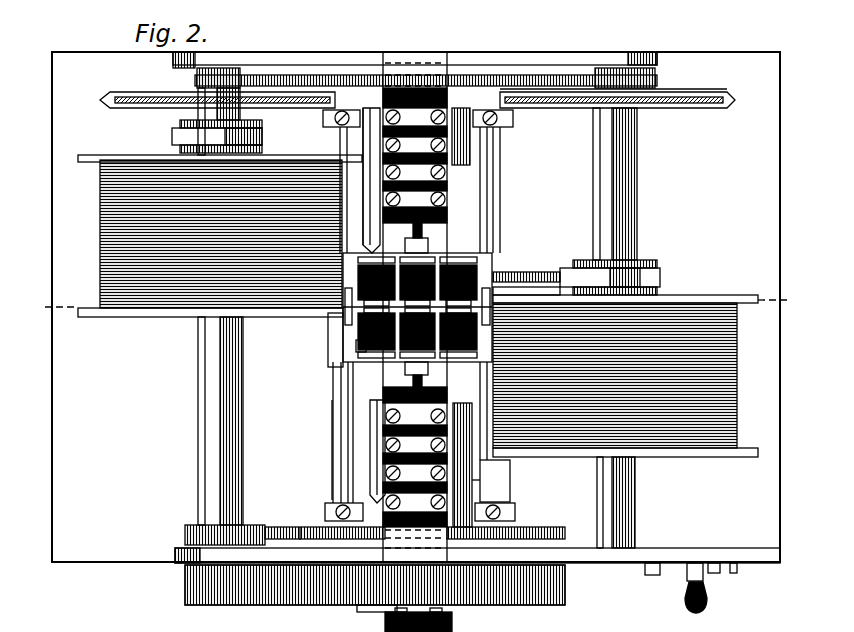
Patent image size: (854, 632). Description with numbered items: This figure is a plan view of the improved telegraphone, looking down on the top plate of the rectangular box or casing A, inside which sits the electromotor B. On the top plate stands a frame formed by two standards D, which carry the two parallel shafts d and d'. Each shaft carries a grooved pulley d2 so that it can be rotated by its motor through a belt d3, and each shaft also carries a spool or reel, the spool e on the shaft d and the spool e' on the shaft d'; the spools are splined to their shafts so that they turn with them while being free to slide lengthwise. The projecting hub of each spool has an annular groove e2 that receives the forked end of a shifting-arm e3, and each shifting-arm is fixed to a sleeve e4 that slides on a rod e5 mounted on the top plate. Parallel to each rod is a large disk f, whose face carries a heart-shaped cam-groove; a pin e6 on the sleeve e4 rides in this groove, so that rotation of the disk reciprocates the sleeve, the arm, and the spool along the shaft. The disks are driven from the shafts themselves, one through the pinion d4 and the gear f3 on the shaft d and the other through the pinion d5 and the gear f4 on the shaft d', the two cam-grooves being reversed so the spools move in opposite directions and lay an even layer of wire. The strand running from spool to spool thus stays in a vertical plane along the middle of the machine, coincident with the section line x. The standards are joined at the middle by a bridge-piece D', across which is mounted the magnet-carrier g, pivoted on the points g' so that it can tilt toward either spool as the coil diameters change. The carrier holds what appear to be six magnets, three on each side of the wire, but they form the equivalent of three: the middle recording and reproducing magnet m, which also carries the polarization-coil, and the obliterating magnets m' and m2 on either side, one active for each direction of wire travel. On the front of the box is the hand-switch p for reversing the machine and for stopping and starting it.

The box or casing A is at (416, 307).
The electromotor B is at (415, 48).
The standard D is at (461, 597).
The bridge-piece D' is at (477, 308).
The shaft d is at (622, 328).
The shaft d' is at (207, 306).
The grooved pulley d2 is at (700, 90).
The belt d3 is at (108, 100).
The pinion d4 is at (656, 78).
The pinion d5 is at (185, 534).
The spool or reel e is at (625, 389).
The spool or reel e' is at (220, 250).
The annular groove e2 is at (205, 137).
The shifting-arm e3 is at (545, 272).
The sleeve e4 is at (328, 345).
The rod e5 is at (425, 233).
The pin e6 is at (482, 480).
The disk f is at (466, 176).
The gear f3 is at (481, 75).
The gear f4 is at (298, 528).
The magnet-carrier g is at (455, 177).
The pivot points g' is at (438, 348).
The recording and reproducing magnet m is at (408, 241).
The obliterating magnet m' is at (450, 280).
The obliterating magnet m2 is at (358, 345).
The hand-switch p is at (688, 590).
The section line x is at (413, 303).